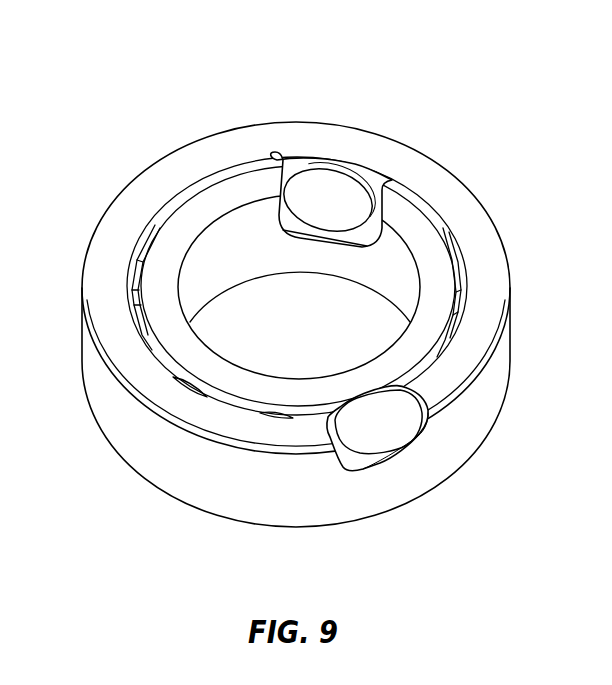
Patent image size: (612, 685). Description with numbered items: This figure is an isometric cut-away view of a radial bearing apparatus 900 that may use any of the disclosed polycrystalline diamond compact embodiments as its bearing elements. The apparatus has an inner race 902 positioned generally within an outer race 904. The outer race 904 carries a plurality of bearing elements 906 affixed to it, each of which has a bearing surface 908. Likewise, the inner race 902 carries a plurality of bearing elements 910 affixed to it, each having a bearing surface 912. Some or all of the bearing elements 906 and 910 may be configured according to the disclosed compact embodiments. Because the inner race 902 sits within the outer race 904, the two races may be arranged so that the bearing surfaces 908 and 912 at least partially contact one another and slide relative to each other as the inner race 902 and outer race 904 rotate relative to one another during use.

The radial bearing apparatus 900 is at (293, 294).
The inner race 902 is at (252, 197).
The outer race 904 is at (98, 448).
The bearing elements 906 is at (433, 476).
The bearing surfaces 908 is at (392, 424).
The bearing elements 910 is at (369, 160).
The bearing surfaces 912 is at (332, 193).